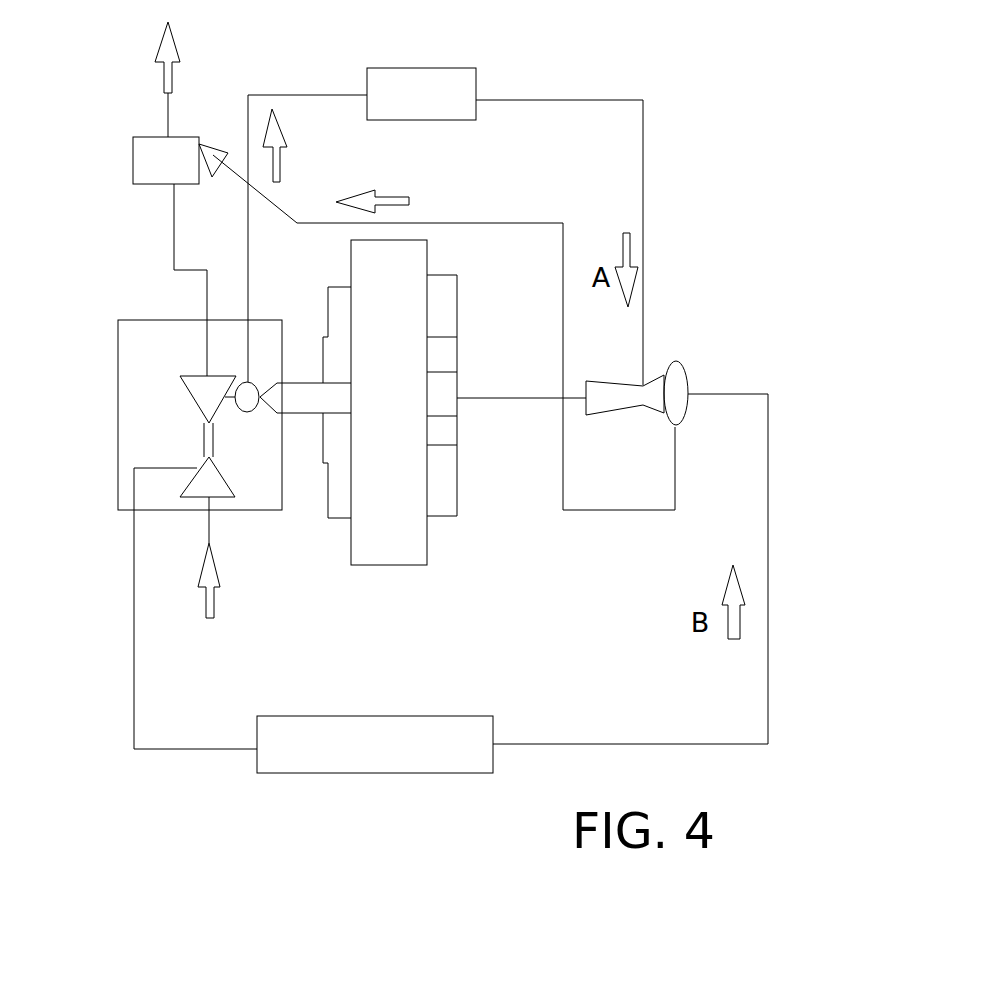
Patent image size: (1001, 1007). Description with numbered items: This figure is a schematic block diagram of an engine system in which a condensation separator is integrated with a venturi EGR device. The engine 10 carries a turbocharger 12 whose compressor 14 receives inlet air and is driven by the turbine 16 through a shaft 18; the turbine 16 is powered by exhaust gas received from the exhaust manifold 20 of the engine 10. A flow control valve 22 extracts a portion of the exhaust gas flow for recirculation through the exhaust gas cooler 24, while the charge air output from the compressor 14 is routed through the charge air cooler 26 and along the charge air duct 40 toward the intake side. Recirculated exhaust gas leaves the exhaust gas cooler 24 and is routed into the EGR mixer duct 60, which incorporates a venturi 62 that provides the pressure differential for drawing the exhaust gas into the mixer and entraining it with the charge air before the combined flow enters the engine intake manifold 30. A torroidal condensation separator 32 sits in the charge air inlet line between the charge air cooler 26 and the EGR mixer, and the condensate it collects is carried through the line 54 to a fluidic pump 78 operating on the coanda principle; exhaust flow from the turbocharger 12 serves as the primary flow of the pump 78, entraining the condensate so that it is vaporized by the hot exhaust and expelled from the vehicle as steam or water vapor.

The engine 10 is at (397, 527).
The turbocharger 12 is at (118, 422).
The compressor 14 is at (210, 485).
The turbine 16 is at (207, 392).
The shaft 18 is at (203, 437).
The exhaust manifold 20 is at (328, 502).
The flow control valve 22 is at (248, 380).
The exhaust gas cooler 24 is at (422, 68).
The charge air cooler 26 is at (387, 715).
The intake manifold 30 is at (457, 493).
The torroidal condensation separator 32 is at (682, 362).
The charge air duct 40 is at (768, 465).
The line 54 is at (677, 468).
The EGR mixer duct 60 is at (643, 182).
The venturi 62 is at (608, 381).
The fluidic pump 78 is at (133, 158).